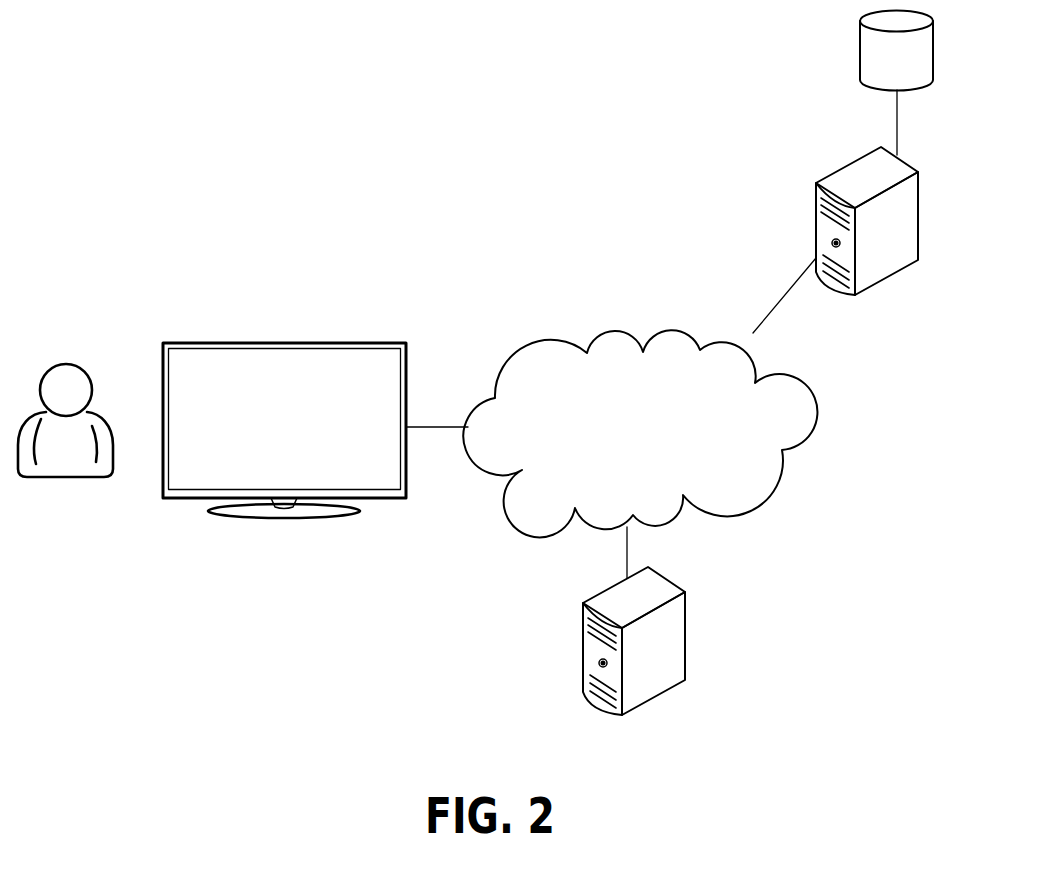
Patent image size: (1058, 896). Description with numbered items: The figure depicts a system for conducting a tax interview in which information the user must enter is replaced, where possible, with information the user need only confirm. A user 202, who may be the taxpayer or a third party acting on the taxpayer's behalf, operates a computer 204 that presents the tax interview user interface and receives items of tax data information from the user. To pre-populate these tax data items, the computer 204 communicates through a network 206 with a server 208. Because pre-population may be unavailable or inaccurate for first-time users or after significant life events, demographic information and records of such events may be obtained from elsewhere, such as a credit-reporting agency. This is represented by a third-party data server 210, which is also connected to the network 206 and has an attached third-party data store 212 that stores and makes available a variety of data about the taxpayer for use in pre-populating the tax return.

The user 202 is at (60, 482).
The computer 204 is at (328, 340).
The network 206 is at (542, 337).
The server 208 is at (685, 640).
The third-party data server 210 is at (816, 217).
The third-party data store 212 is at (860, 55).